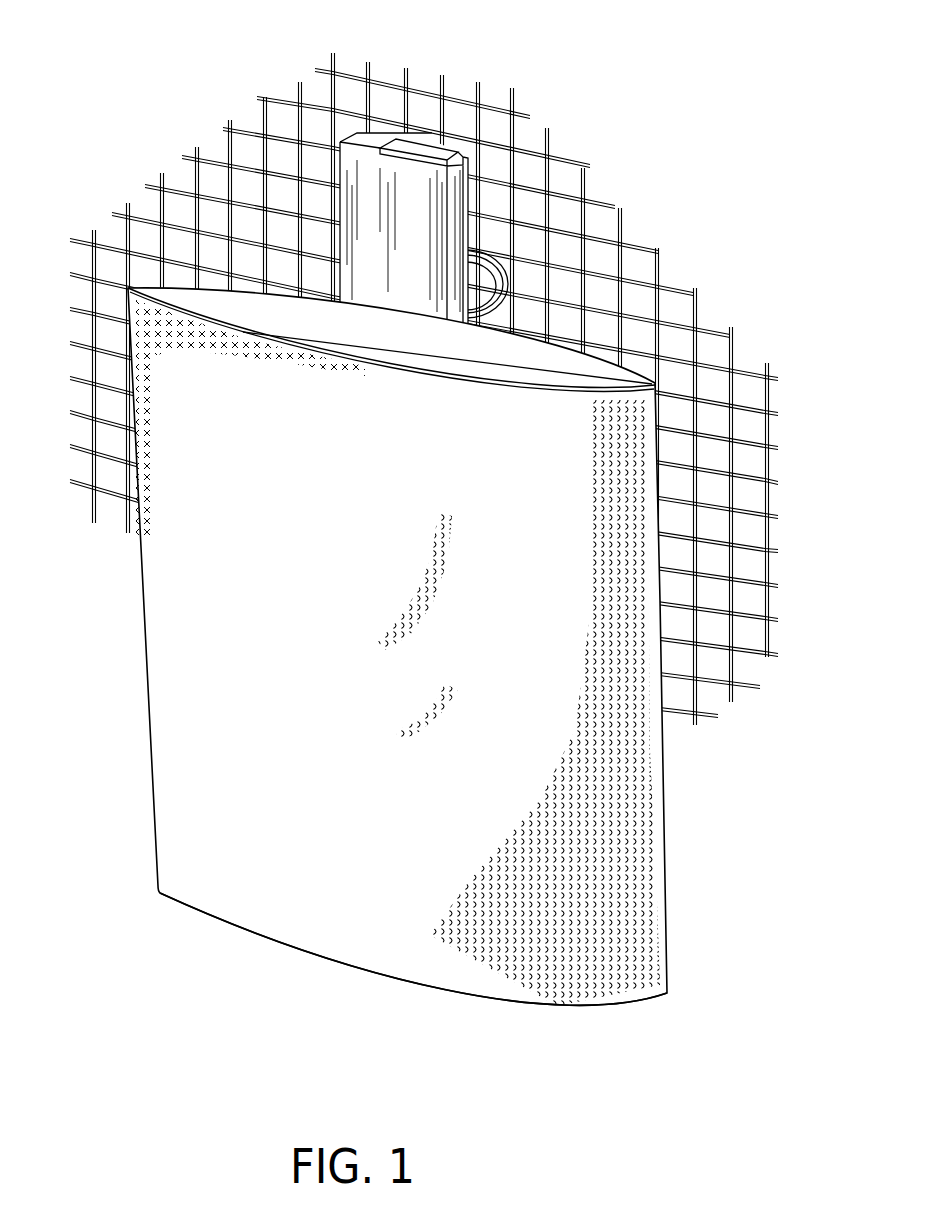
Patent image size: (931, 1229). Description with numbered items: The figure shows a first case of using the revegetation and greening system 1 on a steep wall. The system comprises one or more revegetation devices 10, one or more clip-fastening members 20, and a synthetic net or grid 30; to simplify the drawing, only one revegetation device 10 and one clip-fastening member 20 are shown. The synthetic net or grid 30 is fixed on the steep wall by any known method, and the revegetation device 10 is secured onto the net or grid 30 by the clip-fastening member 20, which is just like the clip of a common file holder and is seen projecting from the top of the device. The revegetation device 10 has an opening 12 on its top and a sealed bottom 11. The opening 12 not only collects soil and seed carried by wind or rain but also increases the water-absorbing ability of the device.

The bag package assembly 1 is at (424, 521).
The revegetation device 10 is at (392, 578).
The sealed bottom 11 is at (342, 955).
The opening 12 is at (557, 372).
The clip-fastening member 20 is at (391, 128).
The synthetic net or grid 30 is at (722, 390).